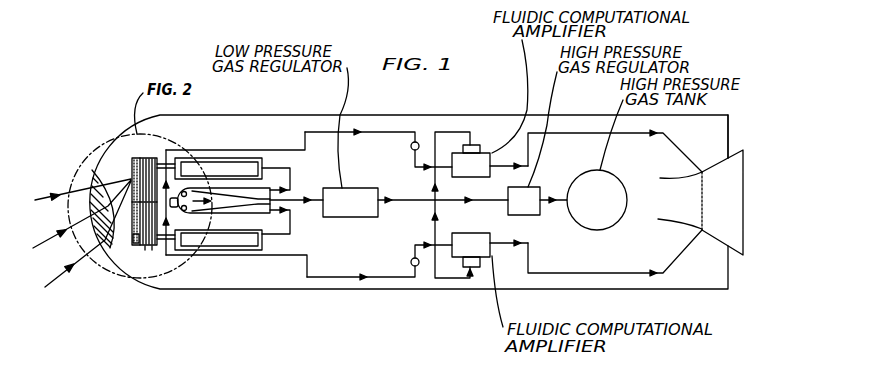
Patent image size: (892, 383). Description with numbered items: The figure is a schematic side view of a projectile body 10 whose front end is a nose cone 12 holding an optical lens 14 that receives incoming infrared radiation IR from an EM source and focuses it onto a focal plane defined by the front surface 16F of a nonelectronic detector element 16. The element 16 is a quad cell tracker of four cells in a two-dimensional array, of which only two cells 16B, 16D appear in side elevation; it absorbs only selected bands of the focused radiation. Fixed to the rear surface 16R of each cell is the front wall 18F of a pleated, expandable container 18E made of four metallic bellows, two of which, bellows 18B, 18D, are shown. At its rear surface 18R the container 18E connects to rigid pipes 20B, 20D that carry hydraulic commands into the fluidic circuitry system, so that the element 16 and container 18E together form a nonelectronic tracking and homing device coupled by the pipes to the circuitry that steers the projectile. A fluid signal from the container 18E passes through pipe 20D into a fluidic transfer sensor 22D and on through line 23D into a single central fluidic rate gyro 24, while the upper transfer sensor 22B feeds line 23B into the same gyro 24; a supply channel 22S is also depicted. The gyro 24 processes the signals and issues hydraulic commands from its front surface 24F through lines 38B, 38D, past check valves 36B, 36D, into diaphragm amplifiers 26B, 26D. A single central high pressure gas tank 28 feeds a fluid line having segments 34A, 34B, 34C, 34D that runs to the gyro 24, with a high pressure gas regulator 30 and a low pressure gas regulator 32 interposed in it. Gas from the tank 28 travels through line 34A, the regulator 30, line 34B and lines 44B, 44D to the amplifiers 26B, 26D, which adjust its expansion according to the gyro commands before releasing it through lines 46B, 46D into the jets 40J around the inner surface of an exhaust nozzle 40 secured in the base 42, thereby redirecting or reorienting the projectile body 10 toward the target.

The projectile body 10 is at (85, 102).
The nose cone 12 is at (106, 150).
The optical lens 14 is at (95, 181).
The infrared radiation IR is at (66, 201).
The nonelectronic detector element 16 is at (111, 213).
The cell 16B is at (132, 168).
The cell 16D is at (133, 238).
The rear surface 16R is at (150, 160).
The front surface 16F is at (138, 247).
The bellows 18B is at (157, 158).
The bellows 18D is at (170, 248).
The rear surface 18R is at (165, 160).
The front wall 18F is at (146, 248).
The expandable container 18E is at (152, 250).
The pipe 20B is at (237, 137).
The pipe 20D is at (251, 272).
The fluidic transfer sensor 22B is at (247, 160).
The fluidic transfer sensor 22D is at (262, 252).
The regulator supply channel 22S is at (221, 158).
The line 23B is at (301, 152).
The line 23D is at (307, 257).
The fluidic rate gyro 24 is at (252, 232).
The front surface 24F is at (185, 212).
The diaphragm amplifier 26B is at (482, 153).
The diaphragm amplifier 26D is at (490, 257).
The high pressure gas tank 28 is at (602, 230).
The high pressure gas regulator 30 is at (527, 188).
The low pressure gas regulator 32 is at (363, 189).
The fluid line segment 34A is at (560, 203).
The fluid line segment 34B is at (447, 205).
The fluid line segment 34C is at (412, 203).
The fluid line segment 34D is at (316, 196).
The check valve 36B is at (417, 141).
The check valve 36D is at (418, 267).
The fluid line 38B is at (388, 132).
The fluid line 38D is at (383, 278).
The exhaust nozzle 40 is at (710, 223).
The jets 40J is at (702, 228).
The base 42 is at (728, 130).
The line 44B is at (490, 129).
The line 44D is at (491, 283).
The fluid line 46B is at (588, 133).
The fluid line 46D is at (620, 274).